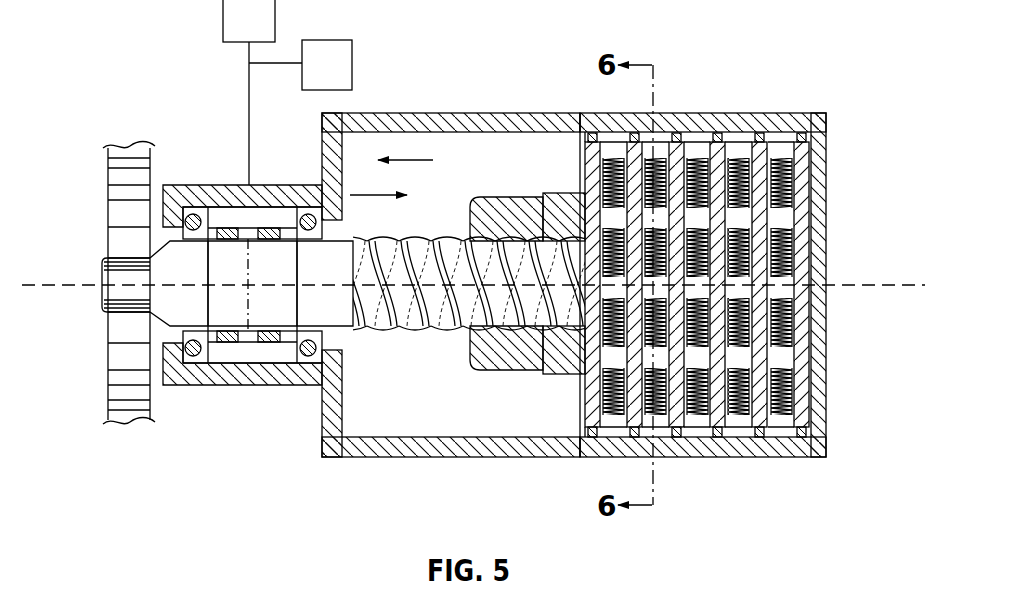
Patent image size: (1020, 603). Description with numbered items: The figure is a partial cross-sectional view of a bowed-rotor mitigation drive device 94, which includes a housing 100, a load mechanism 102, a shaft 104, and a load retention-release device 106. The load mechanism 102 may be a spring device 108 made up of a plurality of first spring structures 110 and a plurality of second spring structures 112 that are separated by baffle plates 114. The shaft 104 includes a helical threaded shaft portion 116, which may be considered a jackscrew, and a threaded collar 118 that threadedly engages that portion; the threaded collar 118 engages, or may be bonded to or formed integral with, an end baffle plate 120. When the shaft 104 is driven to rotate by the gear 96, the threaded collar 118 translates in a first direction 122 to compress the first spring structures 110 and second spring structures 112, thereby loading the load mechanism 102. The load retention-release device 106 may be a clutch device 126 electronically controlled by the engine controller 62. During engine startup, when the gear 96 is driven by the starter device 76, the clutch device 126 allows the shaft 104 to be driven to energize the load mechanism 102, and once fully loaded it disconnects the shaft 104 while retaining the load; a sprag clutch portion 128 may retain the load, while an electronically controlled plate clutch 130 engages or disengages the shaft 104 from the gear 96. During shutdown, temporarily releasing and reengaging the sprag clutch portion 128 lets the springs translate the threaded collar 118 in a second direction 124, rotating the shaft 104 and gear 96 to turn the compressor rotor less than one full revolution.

The engine controller 62 is at (265, 30).
The starter device 76 is at (344, 80).
The bowed-rotor mitigation drive device 94 is at (513, 106).
The gear 96 is at (117, 375).
The housing 100 is at (370, 459).
The load mechanism 102 is at (805, 242).
The shaft 104 is at (388, 333).
The load retention-release device 106 is at (243, 351).
The spring device 108 is at (578, 410).
The first spring structures 110 is at (743, 149).
The second spring structures 112 is at (746, 226).
The baffle plates 114 is at (677, 141).
The helical threaded shaft portion 116 is at (438, 333).
The threaded collar 118 is at (565, 355).
The end baffle plate 120 is at (590, 172).
The first direction 122 is at (367, 193).
The second direction 124 is at (408, 160).
The clutch device 126 is at (240, 218).
The sprag clutch portion 128 is at (285, 365).
The electronically controlled plate clutch 130 is at (228, 344).